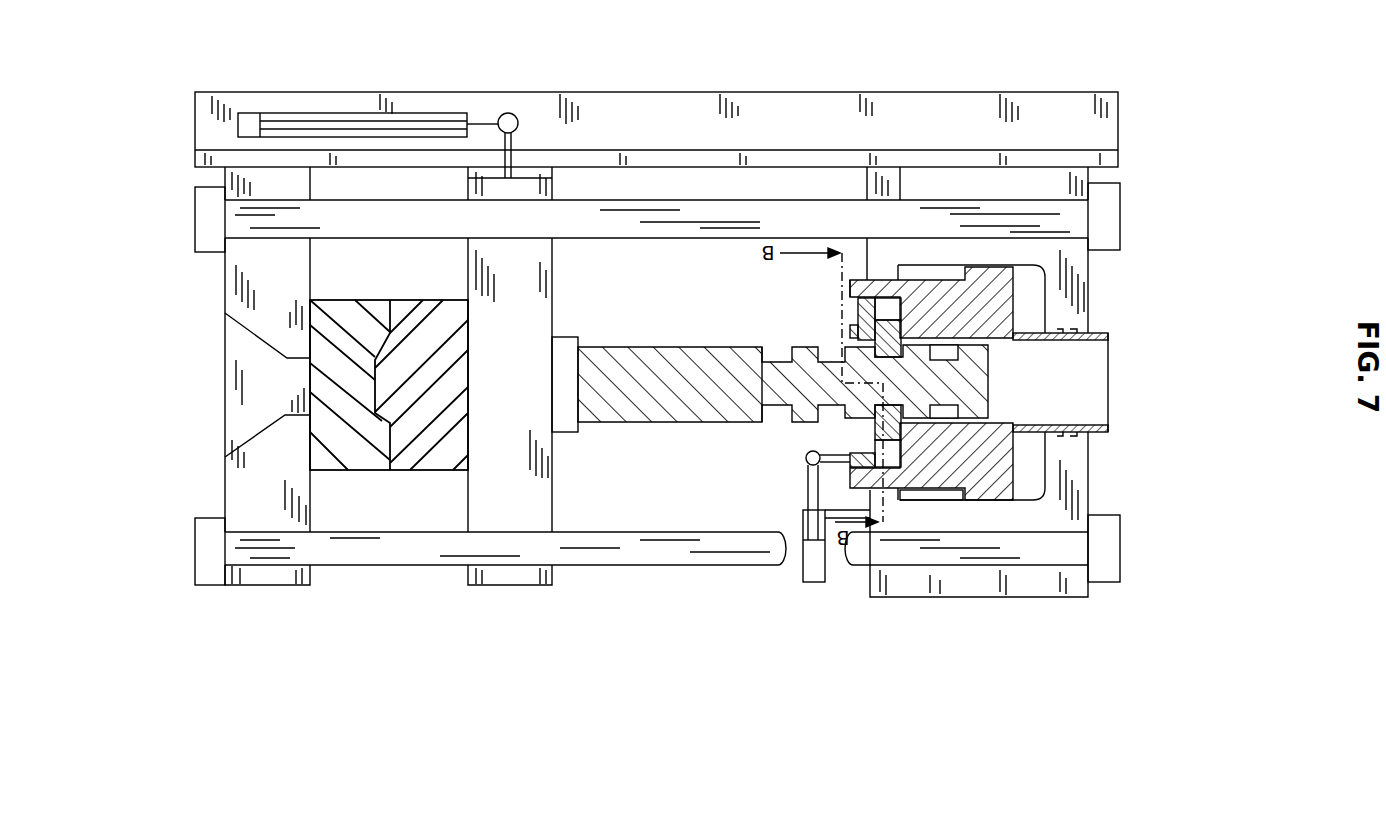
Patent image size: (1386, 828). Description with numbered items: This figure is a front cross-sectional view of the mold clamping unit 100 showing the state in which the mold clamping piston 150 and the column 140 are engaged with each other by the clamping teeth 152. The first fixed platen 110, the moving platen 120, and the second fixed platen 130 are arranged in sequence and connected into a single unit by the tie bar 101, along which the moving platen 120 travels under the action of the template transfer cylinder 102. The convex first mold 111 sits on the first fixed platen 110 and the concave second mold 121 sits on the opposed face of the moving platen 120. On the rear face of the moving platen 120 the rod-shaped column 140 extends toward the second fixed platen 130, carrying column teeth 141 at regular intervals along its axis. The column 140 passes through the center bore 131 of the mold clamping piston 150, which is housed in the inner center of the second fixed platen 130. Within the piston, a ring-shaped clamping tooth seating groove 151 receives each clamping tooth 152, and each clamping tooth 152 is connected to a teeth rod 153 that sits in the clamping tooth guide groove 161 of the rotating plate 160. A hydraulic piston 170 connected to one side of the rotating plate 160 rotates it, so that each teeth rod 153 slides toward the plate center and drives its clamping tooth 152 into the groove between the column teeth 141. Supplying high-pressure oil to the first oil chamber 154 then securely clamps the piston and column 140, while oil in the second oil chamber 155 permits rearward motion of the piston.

The molding clamping unit 100 is at (172, 648).
The tie bar 101 is at (615, 550).
The template transfer cylinder 102 is at (305, 115).
The first fixed platen 110 is at (268, 500).
The first mold 111 is at (343, 450).
The moving platen 120 is at (500, 482).
The second mold 121 is at (412, 413).
The second fixed platen 130 is at (1075, 583).
The center bore 131 is at (1060, 377).
The column 140 is at (700, 387).
The column teeth 141 is at (750, 340).
The mold clamping piston 150 is at (990, 473).
The clamping tooth seating groove 151 is at (866, 310).
The clamping tooth 152 is at (905, 280).
The teeth rod 153 is at (862, 427).
The first oil chamber 154 is at (1037, 458).
The second oil chamber 155 is at (925, 495).
The rotating plate 160 is at (850, 303).
The clamping tooth guide groove 161 is at (858, 447).
The hydraulic piston 170 is at (822, 583).